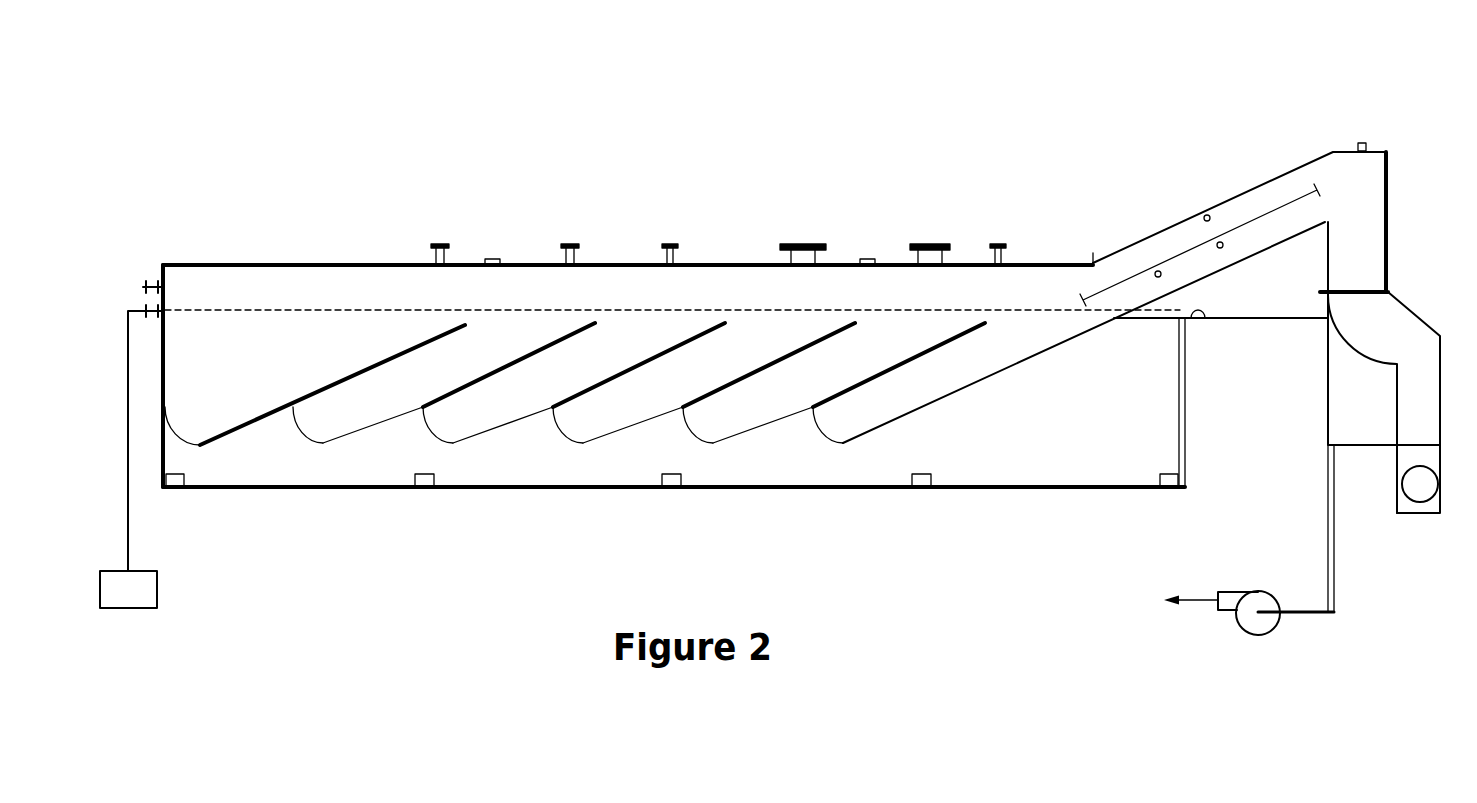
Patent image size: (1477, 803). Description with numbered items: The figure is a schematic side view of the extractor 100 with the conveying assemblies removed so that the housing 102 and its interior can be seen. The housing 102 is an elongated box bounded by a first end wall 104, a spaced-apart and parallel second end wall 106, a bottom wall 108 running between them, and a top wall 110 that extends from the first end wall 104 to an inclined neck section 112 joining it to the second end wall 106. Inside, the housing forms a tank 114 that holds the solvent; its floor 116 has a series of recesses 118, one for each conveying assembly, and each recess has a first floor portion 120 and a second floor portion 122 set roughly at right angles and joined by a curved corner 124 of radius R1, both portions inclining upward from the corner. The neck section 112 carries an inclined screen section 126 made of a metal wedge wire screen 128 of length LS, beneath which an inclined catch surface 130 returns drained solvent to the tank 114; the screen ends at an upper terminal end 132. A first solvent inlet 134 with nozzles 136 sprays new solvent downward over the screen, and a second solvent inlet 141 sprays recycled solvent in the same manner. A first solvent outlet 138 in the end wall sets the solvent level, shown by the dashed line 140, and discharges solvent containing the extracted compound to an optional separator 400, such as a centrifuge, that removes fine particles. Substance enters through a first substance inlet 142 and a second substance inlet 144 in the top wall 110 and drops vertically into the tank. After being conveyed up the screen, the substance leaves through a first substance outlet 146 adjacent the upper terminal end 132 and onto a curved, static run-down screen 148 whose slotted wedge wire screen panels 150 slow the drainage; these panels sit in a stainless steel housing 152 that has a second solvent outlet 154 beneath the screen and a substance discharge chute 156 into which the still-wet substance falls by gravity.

The extractor 100 is at (275, 150).
The housing 102 is at (222, 240).
The first end wall 104 is at (159, 455).
The second end wall 106 is at (1187, 417).
The bottom wall 108 is at (298, 488).
The top wall 110 is at (280, 265).
The inclined neck section 112 is at (1272, 182).
The tank 114 is at (272, 350).
The floor 116 is at (181, 395).
The recess 118 is at (262, 376).
The first floor portion 120 is at (177, 433).
The second floor portion 122 is at (230, 430).
The curved corner 124 is at (207, 445).
The inclined screen section 126 is at (1278, 268).
The metal wedge wire screen 128 is at (1203, 280).
The inclined catch surface 130 is at (1200, 321).
The upper terminal end 132 is at (1330, 220).
The first solvent inlet 134 is at (1190, 193).
The nozzles 136 is at (1220, 241).
The first solvent outlet 138 is at (143, 300).
The dashed line 140 is at (285, 310).
The second solvent inlet 141 is at (1158, 278).
The first substance inlet 142 is at (440, 244).
The second substance inlet 144 is at (570, 244).
The first substance outlet 146 is at (1396, 274).
The run-down screen 148 is at (1363, 325).
The wedge wire screen panels 150 is at (1372, 367).
The housing 152 is at (1443, 360).
The second solvent outlet 154 is at (1328, 447).
The substance discharge chute 156 is at (1427, 398).
The separator 400 is at (158, 590).
The radius of curved corner R1 is at (204, 433).
The length of inclined screen section LS is at (1200, 245).